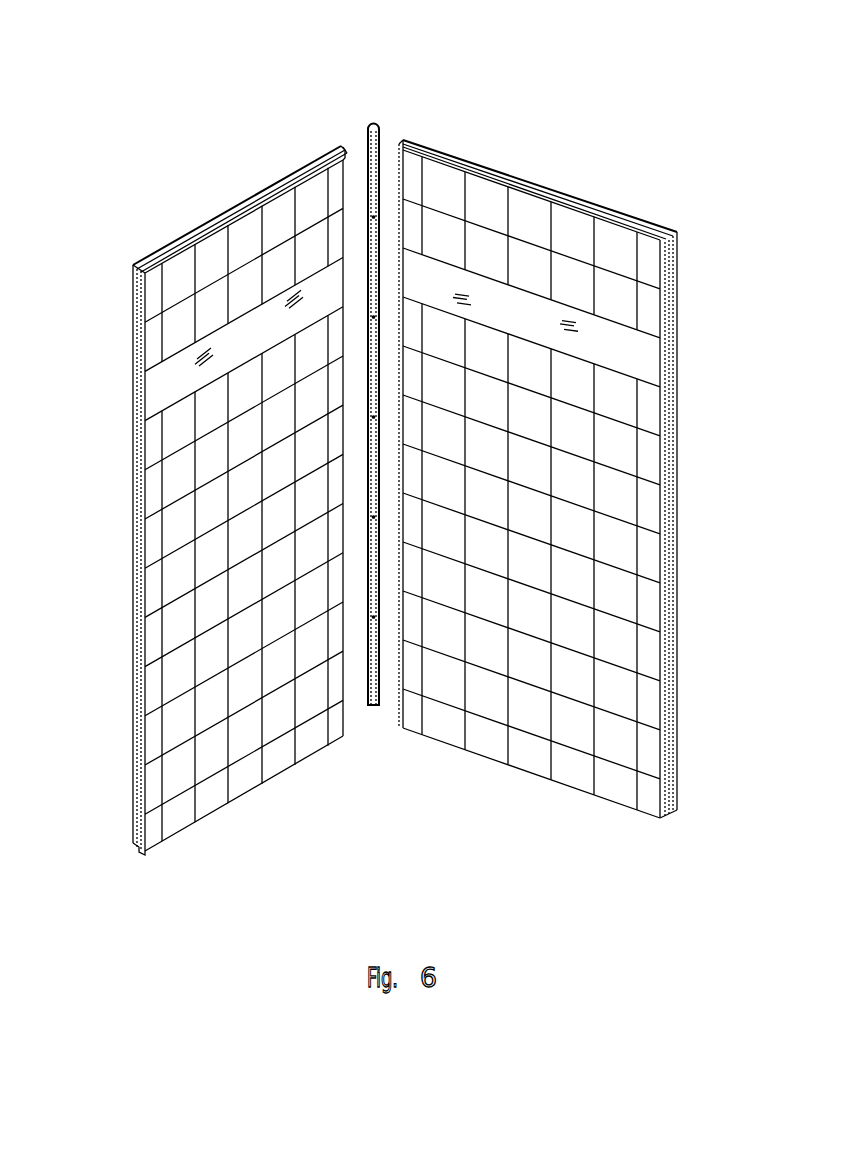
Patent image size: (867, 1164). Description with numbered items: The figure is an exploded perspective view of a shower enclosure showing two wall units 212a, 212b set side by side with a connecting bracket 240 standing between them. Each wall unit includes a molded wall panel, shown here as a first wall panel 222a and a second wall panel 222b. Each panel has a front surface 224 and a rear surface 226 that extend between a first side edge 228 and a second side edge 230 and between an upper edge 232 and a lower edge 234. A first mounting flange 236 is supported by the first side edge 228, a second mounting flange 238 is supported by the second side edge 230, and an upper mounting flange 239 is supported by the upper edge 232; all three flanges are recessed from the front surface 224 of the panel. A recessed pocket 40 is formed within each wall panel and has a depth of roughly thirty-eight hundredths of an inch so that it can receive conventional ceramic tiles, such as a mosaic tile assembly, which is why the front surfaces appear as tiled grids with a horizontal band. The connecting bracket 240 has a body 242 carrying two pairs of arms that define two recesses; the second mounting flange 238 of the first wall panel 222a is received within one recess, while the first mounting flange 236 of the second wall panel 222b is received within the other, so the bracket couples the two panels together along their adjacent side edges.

The first wall unit 212a is at (217, 462).
The second wall unit 212b is at (573, 438).
The first wall panel 222a is at (152, 538).
The second wall panel 222b is at (641, 557).
The front surface 224 is at (165, 630).
The rear surface 226 is at (130, 770).
The first side edge 228 is at (132, 340).
The second side edge 230 is at (349, 157).
The upper edge 232 is at (158, 250).
The lower edge 234 is at (275, 777).
The first mounting flange 236 is at (405, 150).
The second mounting flange 238 is at (342, 148).
The upper mounting flange 239 is at (262, 196).
The connecting bracket 240 is at (373, 707).
The body 242 is at (378, 128).
The recessed pocket 40 is at (162, 393).